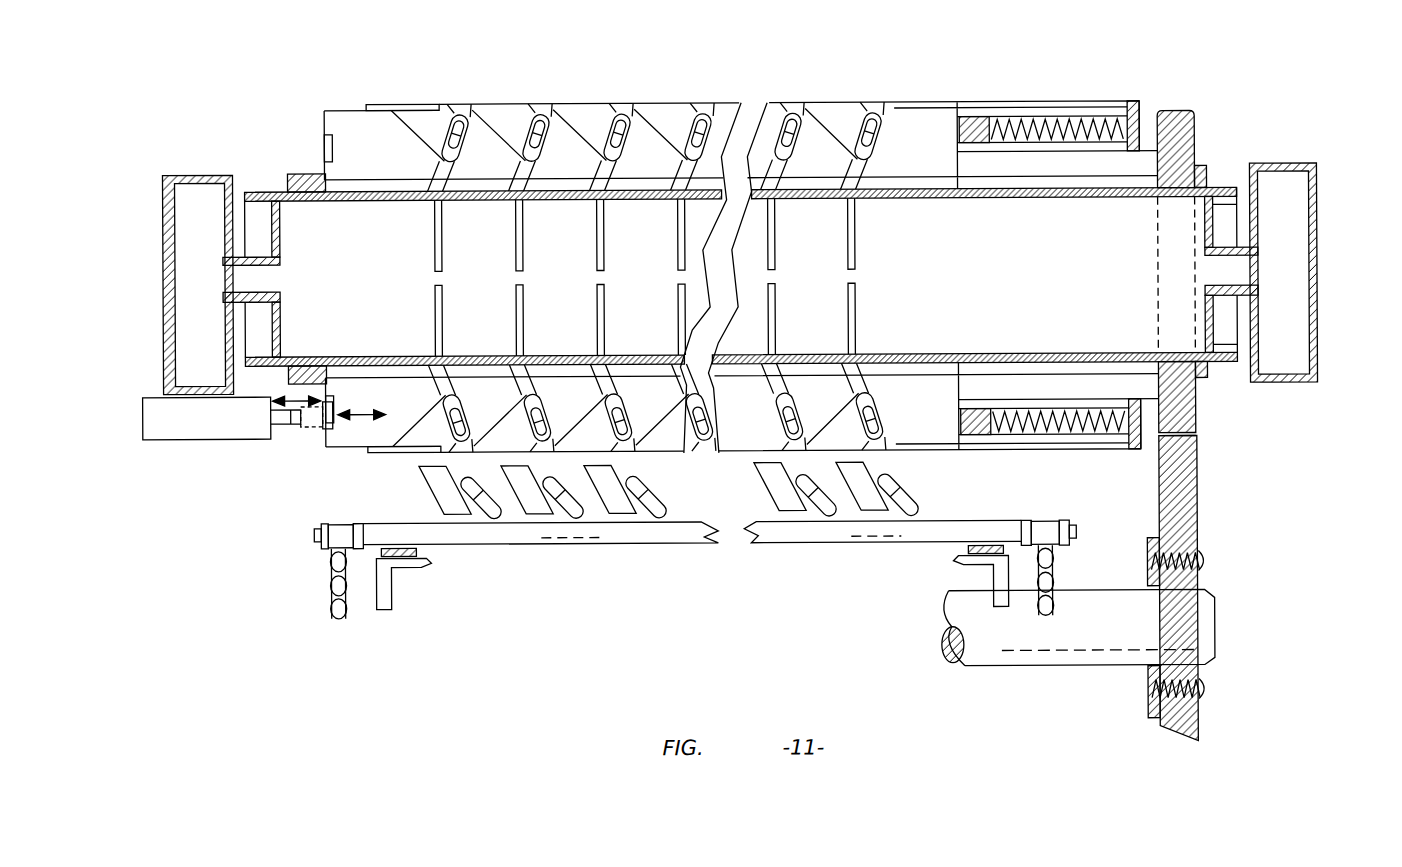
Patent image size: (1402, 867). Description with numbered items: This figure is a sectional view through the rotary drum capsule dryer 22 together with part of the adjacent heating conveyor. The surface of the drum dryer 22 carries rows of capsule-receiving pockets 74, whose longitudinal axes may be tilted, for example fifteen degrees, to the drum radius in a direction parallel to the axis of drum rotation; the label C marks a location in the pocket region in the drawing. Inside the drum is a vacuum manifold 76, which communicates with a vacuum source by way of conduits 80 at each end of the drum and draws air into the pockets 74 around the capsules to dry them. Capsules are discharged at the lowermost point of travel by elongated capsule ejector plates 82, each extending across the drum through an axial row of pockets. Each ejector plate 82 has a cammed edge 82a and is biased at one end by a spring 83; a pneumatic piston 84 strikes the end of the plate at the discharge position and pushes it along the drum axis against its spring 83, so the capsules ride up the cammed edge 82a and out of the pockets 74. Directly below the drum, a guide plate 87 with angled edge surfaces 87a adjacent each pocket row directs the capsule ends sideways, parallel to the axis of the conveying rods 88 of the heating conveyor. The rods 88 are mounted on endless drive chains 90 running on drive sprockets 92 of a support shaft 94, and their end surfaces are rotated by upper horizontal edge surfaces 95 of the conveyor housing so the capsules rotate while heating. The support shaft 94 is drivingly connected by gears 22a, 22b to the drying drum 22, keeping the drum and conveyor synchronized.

The rotary drum capsule dryer 22 is at (1252, 128).
The gear 22a is at (1197, 515).
The gear 22b is at (1197, 410).
The capsule-receiving pockets 74 is at (547, 100).
The vacuum manifold 76 is at (1018, 283).
The conduits 80 is at (268, 284).
The capsule ejector plates 82 is at (358, 118).
The cammed edge 82a is at (418, 132).
The spring 83 is at (1085, 110).
The pneumatic piston 84 is at (230, 437).
The guide plate 87 is at (422, 467).
The angled edge surfaces 87a is at (627, 477).
The conveying rods 88 is at (863, 547).
The endless drive chains 90 is at (338, 523).
The drive sprockets 92 is at (1050, 582).
The support shaft 94 is at (1005, 672).
The upper horizontal edge surfaces 95 is at (413, 552).
The cam follower head C is at (627, 118).